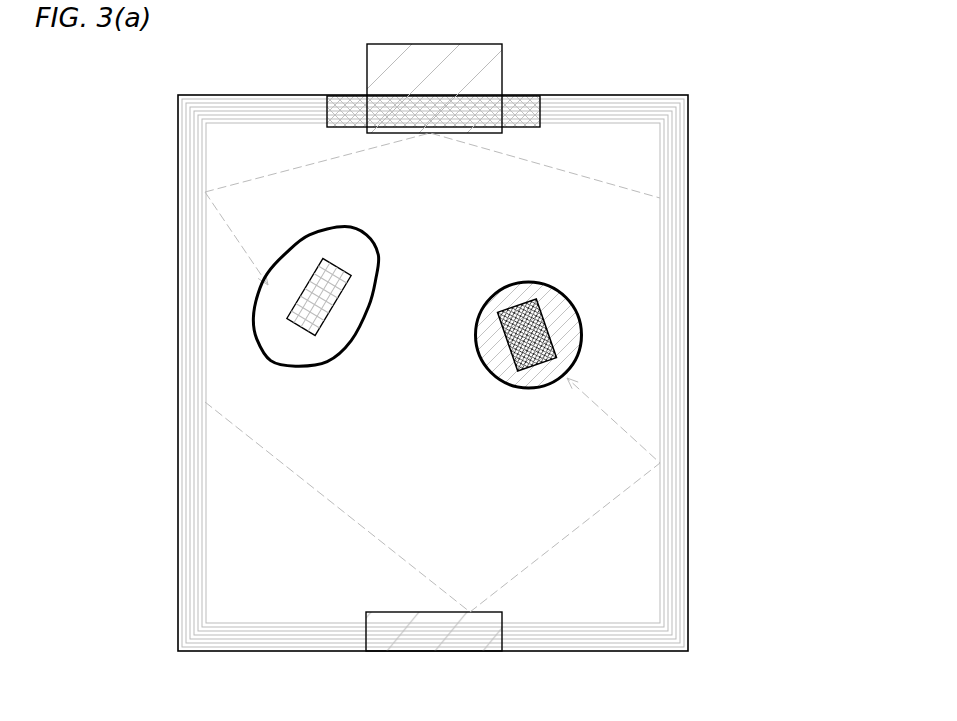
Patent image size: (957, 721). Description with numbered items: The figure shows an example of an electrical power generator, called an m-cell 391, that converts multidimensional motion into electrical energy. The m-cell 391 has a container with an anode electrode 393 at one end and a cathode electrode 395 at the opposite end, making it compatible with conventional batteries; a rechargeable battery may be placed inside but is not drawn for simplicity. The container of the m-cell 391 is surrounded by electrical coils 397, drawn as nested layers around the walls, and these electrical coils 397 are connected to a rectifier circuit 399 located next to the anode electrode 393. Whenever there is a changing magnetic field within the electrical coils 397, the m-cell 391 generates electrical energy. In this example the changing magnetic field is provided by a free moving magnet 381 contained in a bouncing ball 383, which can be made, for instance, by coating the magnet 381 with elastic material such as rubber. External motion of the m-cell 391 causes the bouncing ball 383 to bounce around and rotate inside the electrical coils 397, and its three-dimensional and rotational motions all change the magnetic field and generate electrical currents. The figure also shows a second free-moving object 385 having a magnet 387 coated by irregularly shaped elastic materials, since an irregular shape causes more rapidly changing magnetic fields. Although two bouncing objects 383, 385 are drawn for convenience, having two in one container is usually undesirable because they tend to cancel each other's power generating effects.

The free moving magnet 381 is at (545, 311).
The bouncing ball 383 is at (563, 333).
The free-moving object 385 is at (278, 317).
The magnet 387 is at (327, 287).
The m-cell 391 is at (688, 128).
The anode electrode 393 is at (410, 76).
The cathode electrode 395 is at (397, 620).
The electrical coils 397 is at (240, 353).
The rectifier circuit 399 is at (520, 93).